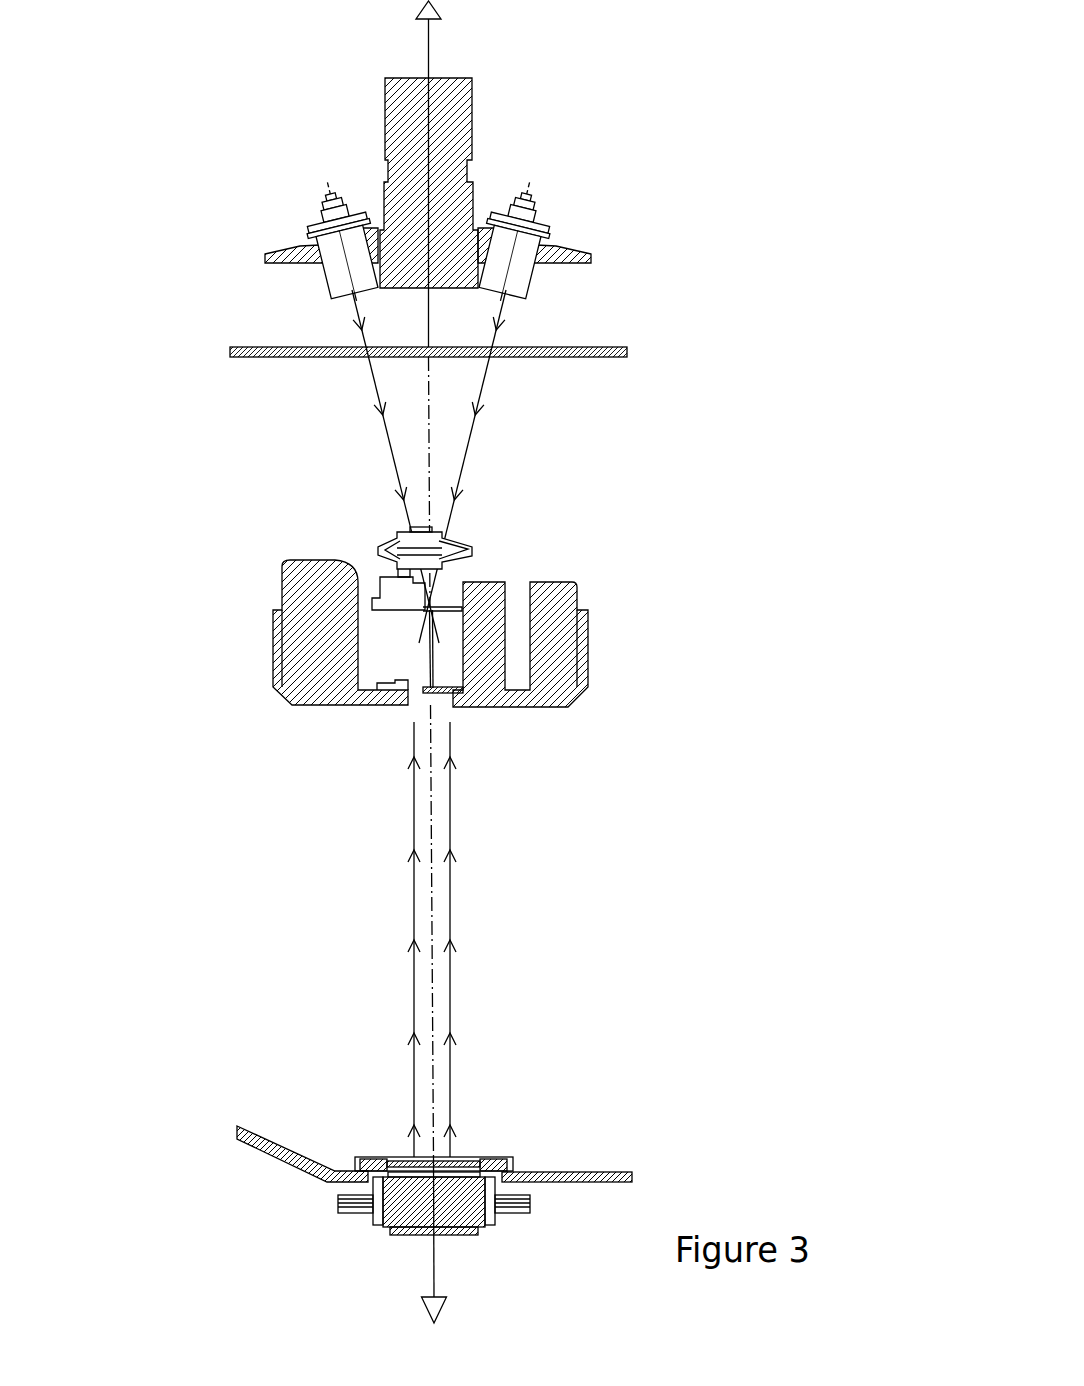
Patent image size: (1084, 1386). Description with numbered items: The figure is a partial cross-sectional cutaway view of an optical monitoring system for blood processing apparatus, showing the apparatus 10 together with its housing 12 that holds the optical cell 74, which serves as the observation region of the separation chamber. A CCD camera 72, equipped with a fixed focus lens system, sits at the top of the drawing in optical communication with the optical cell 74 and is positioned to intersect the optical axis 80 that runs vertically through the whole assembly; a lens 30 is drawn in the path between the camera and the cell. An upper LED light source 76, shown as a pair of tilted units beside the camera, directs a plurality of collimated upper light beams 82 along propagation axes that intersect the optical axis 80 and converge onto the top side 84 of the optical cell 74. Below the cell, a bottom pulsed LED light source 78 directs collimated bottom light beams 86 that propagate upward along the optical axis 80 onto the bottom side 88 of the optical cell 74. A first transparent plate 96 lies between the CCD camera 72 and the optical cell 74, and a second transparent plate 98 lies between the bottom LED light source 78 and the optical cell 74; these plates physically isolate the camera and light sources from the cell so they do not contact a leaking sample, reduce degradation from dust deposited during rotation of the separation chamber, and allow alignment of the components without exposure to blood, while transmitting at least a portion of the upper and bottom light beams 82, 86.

The sample measurement apparatus 10 is at (601, 616).
The housing 12 is at (567, 687).
The lens 30 is at (390, 538).
The CCD camera 72 is at (403, 137).
The optical cell 74 is at (447, 710).
The upper LED light source 76 is at (340, 277).
The bottom pulsed LED light source 78 is at (457, 1230).
The optical axis 80 is at (430, 47).
The collimated upper light beams 82 is at (387, 440).
The top side of optical cell 84 is at (433, 610).
The collimated bottom light beams 86 is at (414, 900).
The bottom side of optical cell 88 is at (410, 710).
The first transparent plate 96 is at (592, 358).
The second transparent plate 98 is at (400, 1158).